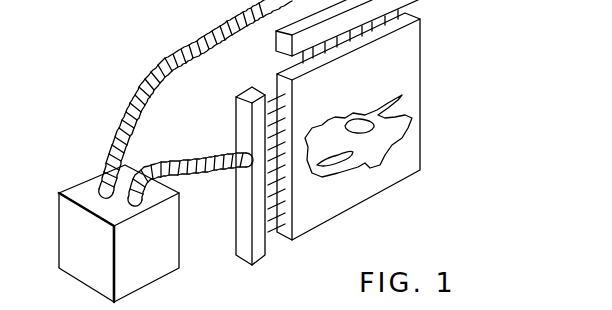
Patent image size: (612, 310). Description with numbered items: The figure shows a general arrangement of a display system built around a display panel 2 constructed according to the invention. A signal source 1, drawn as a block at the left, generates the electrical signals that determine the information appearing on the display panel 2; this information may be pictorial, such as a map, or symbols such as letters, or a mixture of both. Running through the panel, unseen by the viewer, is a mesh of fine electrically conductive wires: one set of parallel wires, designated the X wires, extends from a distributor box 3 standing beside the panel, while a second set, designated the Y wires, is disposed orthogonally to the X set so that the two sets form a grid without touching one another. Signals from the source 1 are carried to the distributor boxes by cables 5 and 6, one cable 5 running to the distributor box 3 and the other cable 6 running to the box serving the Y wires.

The signal source 1 is at (70, 240).
The display panel 2 is at (422, 159).
The distributor box 3 is at (243, 240).
The cable 5 is at (193, 156).
The cable 6 is at (172, 64).
The X wires X is at (276, 260).
The Y wires Y is at (432, 12).